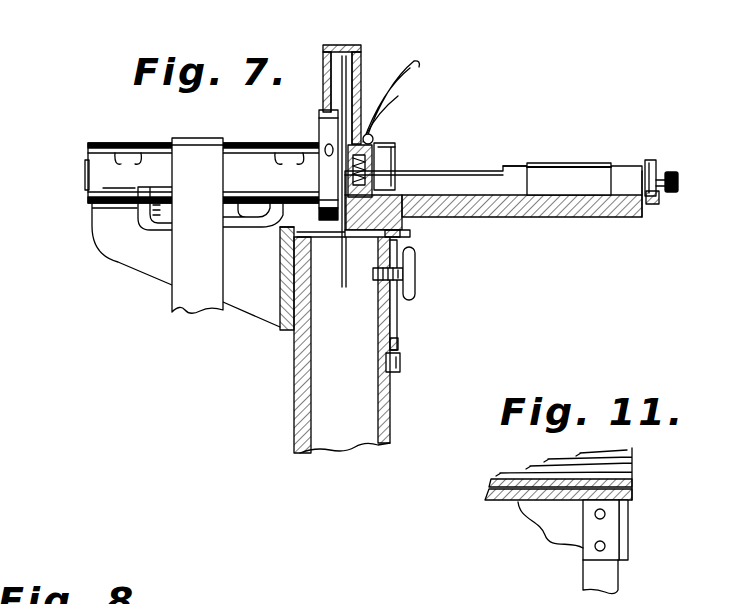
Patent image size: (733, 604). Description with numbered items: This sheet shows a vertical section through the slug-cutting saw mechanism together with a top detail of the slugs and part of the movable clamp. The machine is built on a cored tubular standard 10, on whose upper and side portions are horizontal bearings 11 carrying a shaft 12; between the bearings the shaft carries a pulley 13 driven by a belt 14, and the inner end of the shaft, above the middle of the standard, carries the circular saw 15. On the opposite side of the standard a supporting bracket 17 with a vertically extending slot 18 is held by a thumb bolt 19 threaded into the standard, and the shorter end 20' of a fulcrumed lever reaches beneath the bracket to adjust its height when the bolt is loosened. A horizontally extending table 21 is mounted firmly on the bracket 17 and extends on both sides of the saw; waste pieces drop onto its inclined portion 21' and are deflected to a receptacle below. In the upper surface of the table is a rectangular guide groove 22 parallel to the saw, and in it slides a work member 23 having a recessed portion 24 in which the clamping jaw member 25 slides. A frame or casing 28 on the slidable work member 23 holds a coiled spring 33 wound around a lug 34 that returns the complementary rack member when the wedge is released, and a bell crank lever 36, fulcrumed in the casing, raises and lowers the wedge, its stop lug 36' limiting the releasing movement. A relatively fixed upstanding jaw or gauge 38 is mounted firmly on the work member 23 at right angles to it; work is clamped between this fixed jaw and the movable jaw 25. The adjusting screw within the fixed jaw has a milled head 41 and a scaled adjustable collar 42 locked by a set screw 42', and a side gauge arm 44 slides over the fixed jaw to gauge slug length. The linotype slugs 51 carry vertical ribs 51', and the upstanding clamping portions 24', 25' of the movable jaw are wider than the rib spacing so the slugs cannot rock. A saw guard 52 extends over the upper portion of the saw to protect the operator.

In FIG. 7, the cored tubular standard 10 is at (390, 410).
In FIG. 7, the horizontal bearings 11 is at (153, 146).
In FIG. 7, the shaft 12 is at (88, 183).
In FIG. 7, the pulley 13 is at (230, 144).
In FIG. 7, the belt 14 is at (197, 225).
In FIG. 7, the circular saw 15 is at (343, 290).
In FIG. 7, the supporting bracket 17 is at (397, 323).
In FIG. 7, the vertically extending slot 18 is at (398, 332).
In FIG. 7, the thumb bolt 19 is at (416, 271).
In FIG. 7, the shorter end of lever 20' is at (415, 362).
In FIG. 7, the horizontally extending table 21 is at (642, 210).
In FIG. 7, the inclined portion of the table 21' is at (317, 173).
In FIG. 7, the elongated guide groove 22 is at (430, 217).
In FIG. 7, the slidable work member 23 is at (396, 218).
In FIG. 7, the rabbeted or recessed portion 24 is at (376, 251).
In FIG. 7, the clamping jaw member 25 is at (493, 171).
In FIG. 7, the frame or casing 28 is at (374, 160).
In FIG. 7, the saw guard 52 is at (350, 46).
In FIG. 7, the coiled spring 33 is at (372, 150).
In FIG. 7, the lug 34 is at (382, 174).
In FIG. 7, the bell crank lever 36 is at (409, 101).
In FIG. 7, the stop lug 36' is at (397, 112).
In FIG. 7, the fixed upstanding jaw or gauge 38 is at (480, 178).
In FIG. 7, the milled head 41 is at (678, 184).
In FIG. 7, the adjustable collar 42 is at (668, 169).
In FIG. 7, the set screw 42' is at (669, 203).
In FIG. 7, the side gauge arm 44 is at (576, 165).
In FIG. 11, the linotype slugs 51 is at (591, 488).
In FIG. 11, the vertical ribs 51' is at (599, 471).
In FIG. 11, the upstanding clamping portion 24' is at (568, 547).
In FIG. 11, the upstanding clamping portion 25' is at (653, 530).